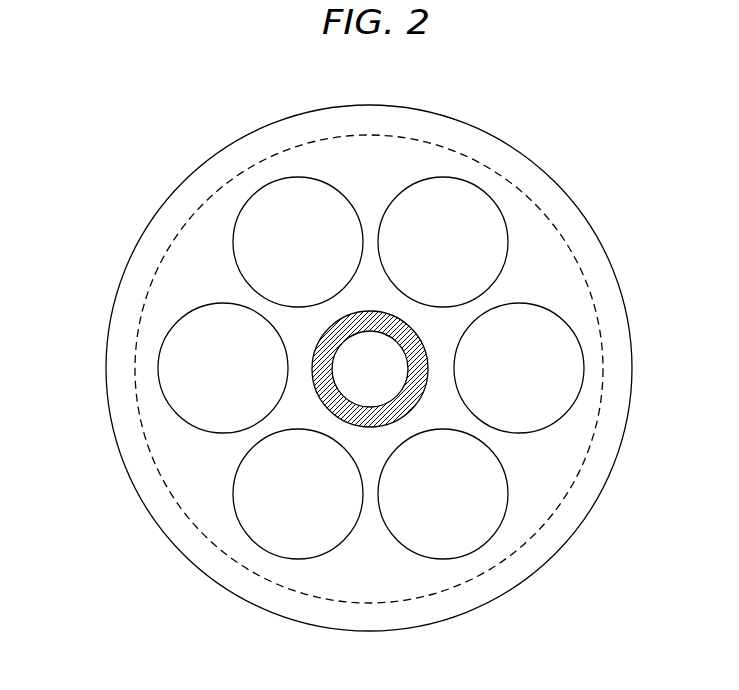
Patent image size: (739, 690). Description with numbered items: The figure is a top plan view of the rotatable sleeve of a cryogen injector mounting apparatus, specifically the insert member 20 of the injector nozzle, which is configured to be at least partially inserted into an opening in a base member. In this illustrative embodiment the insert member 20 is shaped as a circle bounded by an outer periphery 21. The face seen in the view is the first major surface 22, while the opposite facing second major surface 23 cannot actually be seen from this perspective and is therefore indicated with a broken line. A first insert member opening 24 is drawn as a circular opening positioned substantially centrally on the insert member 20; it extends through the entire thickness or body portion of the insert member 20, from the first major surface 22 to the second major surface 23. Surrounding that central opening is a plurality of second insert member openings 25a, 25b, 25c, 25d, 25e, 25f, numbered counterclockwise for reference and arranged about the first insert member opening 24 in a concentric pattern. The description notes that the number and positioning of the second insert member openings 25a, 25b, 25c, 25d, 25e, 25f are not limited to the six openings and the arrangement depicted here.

The insert member 20 is at (282, 151).
The outer periphery 21 is at (612, 472).
The first major surface 22 is at (240, 291).
The second major surface 23 is at (143, 513).
The first insert member opening 24 is at (421, 341).
The second insert member opening 25a is at (283, 252).
The second insert member opening 25b is at (208, 378).
The second insert member opening 25c is at (283, 504).
The second insert member opening 25d is at (428, 504).
The second insert member opening 25e is at (504, 378).
The second insert member opening 25f is at (429, 252).